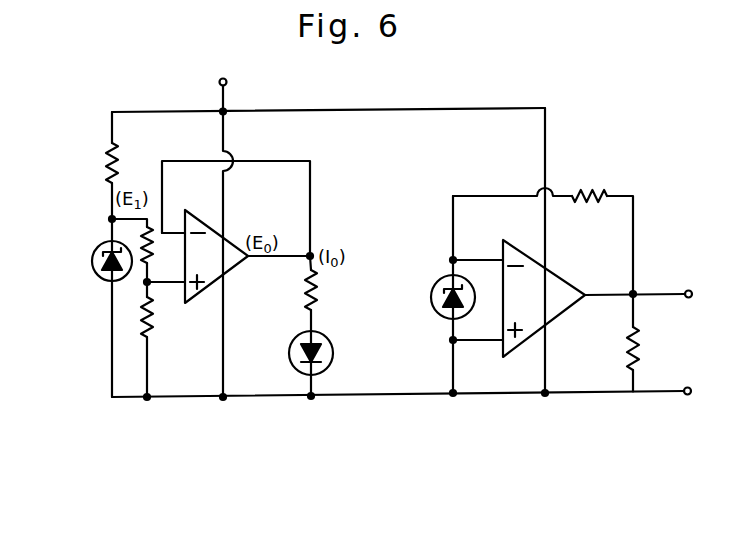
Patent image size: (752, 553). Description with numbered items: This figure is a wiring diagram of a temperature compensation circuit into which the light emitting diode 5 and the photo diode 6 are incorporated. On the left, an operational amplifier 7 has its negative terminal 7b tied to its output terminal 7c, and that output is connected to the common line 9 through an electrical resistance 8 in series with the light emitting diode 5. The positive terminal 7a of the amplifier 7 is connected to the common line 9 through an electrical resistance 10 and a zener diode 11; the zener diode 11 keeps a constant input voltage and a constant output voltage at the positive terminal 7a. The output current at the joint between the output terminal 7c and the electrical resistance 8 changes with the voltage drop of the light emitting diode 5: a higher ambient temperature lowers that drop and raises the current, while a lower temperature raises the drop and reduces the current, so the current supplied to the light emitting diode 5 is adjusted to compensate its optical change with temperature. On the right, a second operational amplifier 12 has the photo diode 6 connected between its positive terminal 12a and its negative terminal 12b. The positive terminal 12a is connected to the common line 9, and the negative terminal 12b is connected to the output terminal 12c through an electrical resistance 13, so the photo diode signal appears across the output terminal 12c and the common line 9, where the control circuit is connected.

The light emitting diode 5 is at (334, 345).
The photo diode 6 is at (431, 297).
The operational amplifier 7 is at (236, 247).
The positive terminal 7a is at (186, 286).
The negative terminal 7b is at (184, 232).
The output terminal 7c is at (250, 259).
The electrical resistance 8 is at (318, 290).
The common line 9 is at (384, 399).
The electrical resistance 10 is at (144, 308).
The zener diode 11 is at (104, 282).
The operational amplifier 12 is at (553, 272).
The positive terminal 12a is at (500, 344).
The negative terminal 12b is at (502, 251).
The output terminal 12c is at (586, 278).
The electrical resistance 13 is at (596, 196).